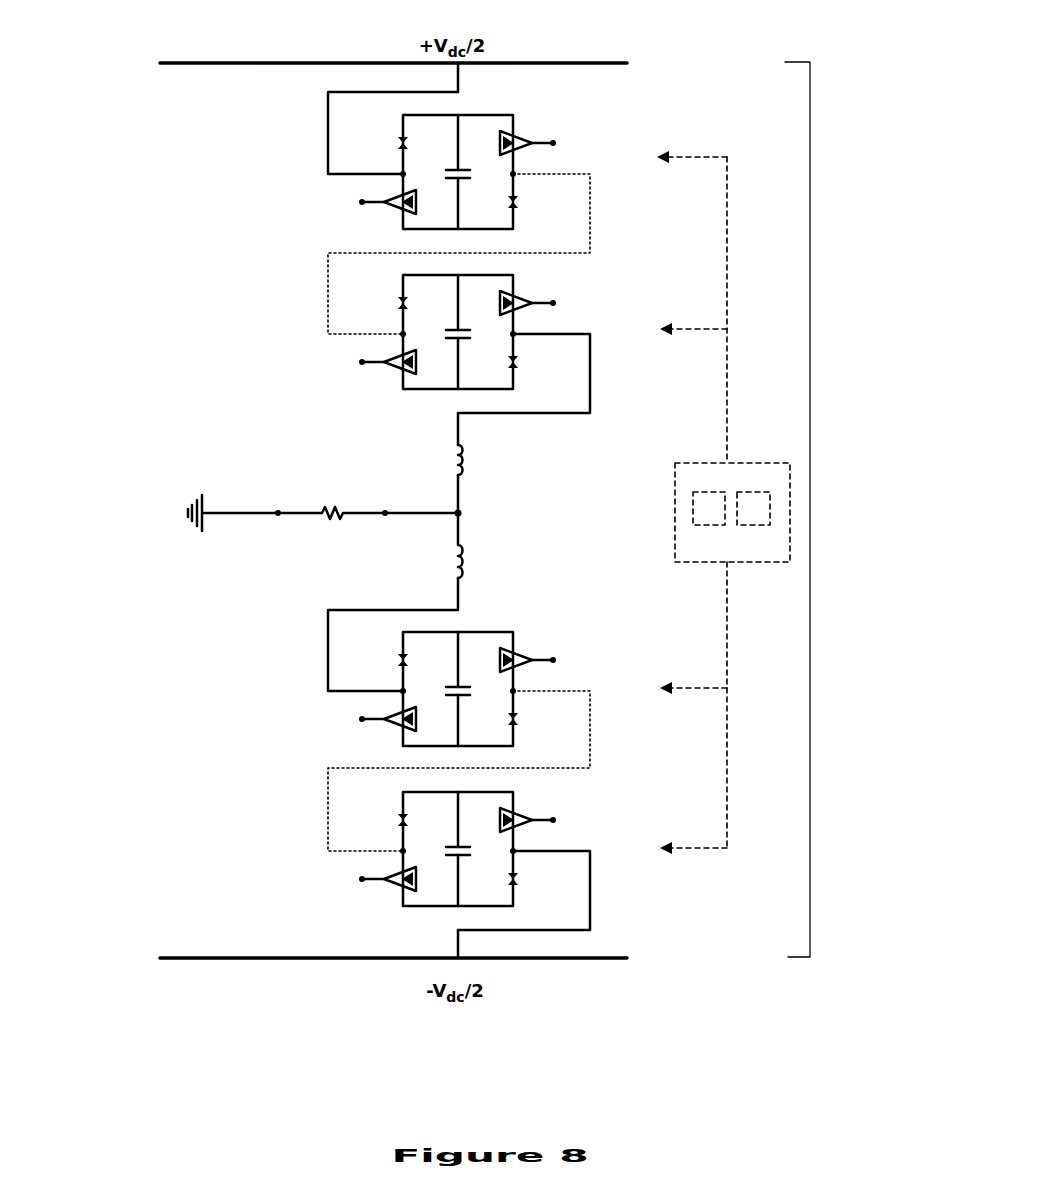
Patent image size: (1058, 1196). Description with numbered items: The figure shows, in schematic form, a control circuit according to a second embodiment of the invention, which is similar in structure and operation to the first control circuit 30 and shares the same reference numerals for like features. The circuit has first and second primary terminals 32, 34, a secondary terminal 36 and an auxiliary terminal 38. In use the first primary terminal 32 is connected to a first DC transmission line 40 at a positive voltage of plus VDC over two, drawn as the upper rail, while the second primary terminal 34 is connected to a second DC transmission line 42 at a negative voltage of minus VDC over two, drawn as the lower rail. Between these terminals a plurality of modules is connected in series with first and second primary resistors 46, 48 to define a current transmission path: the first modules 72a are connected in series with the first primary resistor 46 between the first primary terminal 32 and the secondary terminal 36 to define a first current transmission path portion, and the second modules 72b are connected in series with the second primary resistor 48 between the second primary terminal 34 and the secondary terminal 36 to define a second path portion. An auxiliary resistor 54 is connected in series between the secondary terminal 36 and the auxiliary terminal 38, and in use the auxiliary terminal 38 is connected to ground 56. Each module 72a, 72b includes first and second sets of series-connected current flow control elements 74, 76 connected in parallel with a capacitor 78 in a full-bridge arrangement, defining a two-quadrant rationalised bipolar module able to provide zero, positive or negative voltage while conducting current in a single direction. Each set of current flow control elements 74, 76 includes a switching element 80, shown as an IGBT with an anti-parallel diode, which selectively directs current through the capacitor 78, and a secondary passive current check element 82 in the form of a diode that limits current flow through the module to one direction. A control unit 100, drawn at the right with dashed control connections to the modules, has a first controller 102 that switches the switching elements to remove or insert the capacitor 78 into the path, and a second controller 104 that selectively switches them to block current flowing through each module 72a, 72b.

The first control circuit 30 is at (810, 513).
The first primary terminal 32 is at (470, 72).
The second primary terminal 34 is at (446, 950).
The secondary terminal 36 is at (450, 523).
The auxiliary terminal 38 is at (285, 506).
The first DC transmission line 40 is at (553, 56).
The second DC transmission line 42 is at (584, 971).
The first primary resistor 46 is at (470, 463).
The second primary resistor 48 is at (475, 562).
The auxiliary resistor 54 is at (330, 525).
The ground 56 is at (190, 500).
The first module 72a is at (410, 178).
The second module 72b is at (400, 700).
The first set of series-connected current flow control elements 74 is at (391, 320).
The second set of series-connected current flow control elements 76 is at (537, 323).
The capacitor 78 is at (451, 344).
The switching element 80 is at (527, 291).
The secondary passive current check element 82 is at (397, 297).
The control unit 100 is at (752, 543).
The first controller 102 is at (705, 508).
The second controller 104 is at (758, 510).